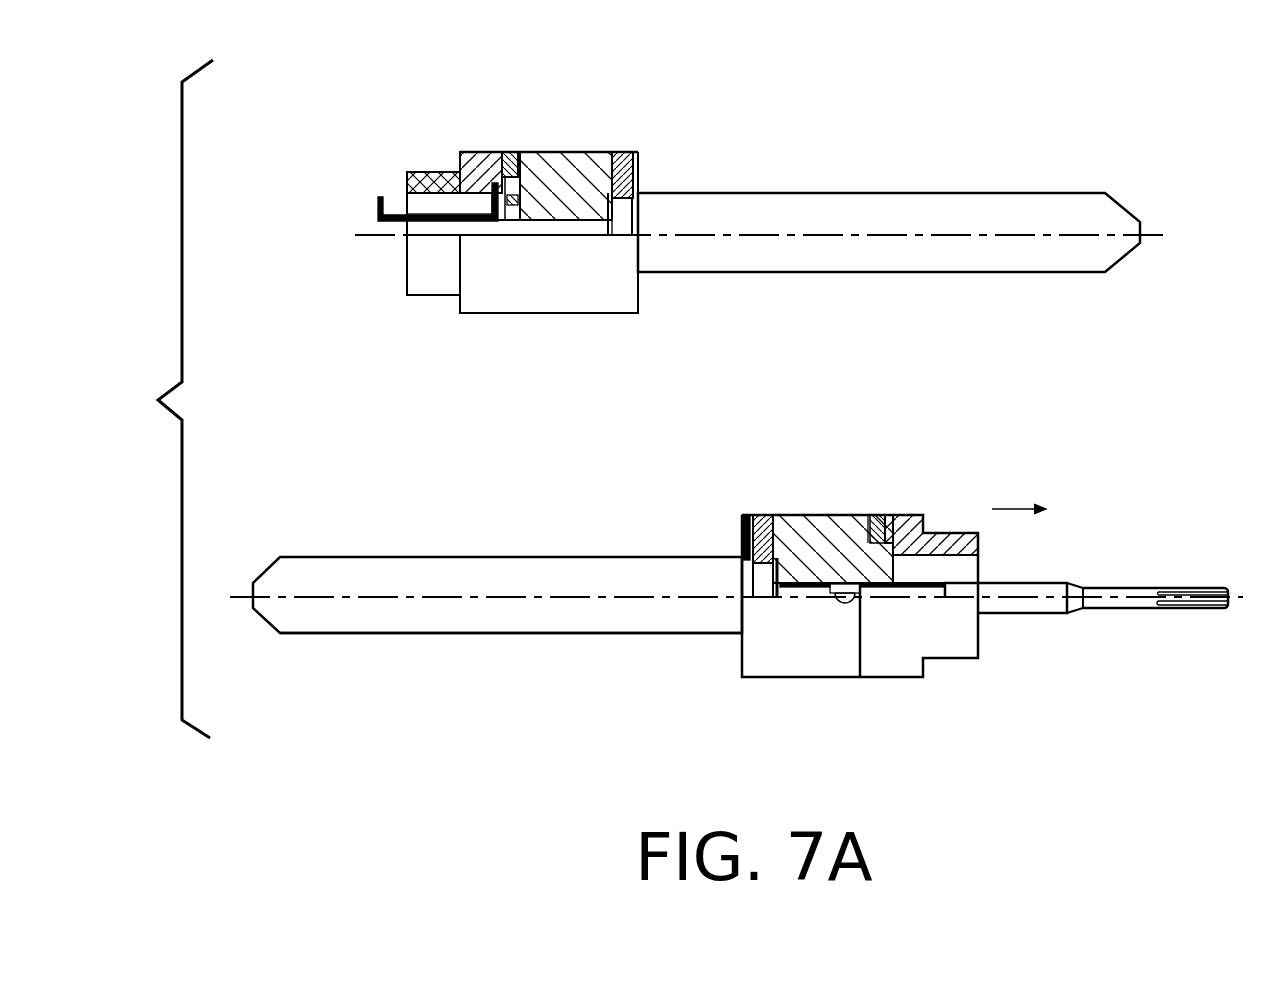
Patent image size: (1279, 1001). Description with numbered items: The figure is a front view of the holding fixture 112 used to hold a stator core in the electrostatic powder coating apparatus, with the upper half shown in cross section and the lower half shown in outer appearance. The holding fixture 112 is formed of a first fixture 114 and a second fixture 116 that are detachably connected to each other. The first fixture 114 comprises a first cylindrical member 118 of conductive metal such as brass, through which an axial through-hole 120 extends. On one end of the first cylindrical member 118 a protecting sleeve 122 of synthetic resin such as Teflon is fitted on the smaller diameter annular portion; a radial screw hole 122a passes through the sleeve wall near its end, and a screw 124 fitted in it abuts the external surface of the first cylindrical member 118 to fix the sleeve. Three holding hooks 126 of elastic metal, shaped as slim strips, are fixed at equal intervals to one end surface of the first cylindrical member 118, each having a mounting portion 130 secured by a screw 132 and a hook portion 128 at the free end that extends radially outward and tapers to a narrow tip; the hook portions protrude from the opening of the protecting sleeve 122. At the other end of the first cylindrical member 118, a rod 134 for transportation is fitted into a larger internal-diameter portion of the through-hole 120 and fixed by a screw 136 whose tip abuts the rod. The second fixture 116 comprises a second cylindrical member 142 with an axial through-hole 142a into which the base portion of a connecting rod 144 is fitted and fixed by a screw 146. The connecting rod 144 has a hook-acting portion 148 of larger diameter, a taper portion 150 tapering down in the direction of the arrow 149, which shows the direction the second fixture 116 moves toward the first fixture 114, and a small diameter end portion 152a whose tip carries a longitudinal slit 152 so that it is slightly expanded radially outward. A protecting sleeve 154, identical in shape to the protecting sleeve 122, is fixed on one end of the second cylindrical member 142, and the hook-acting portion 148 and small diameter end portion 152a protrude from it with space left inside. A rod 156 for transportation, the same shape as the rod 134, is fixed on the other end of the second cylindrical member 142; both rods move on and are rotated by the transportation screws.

The holding fixture 112 is at (317, 254).
The first fixture 114 is at (658, 181).
The second fixture 116 is at (576, 550).
The first cylindrical member 118 is at (565, 157).
The through-hole 120 is at (530, 220).
The protecting sleeve 122 is at (498, 152).
The screw hole 122a is at (505, 157).
The screw 124 is at (517, 157).
The holding hook 126 is at (423, 223).
The hook portion 128 is at (377, 212).
The mounting portion 130 is at (477, 153).
The screw 132 is at (410, 170).
The rod for transportation 134 is at (920, 195).
The screw 136 is at (620, 157).
The second cylindrical member 142 is at (813, 535).
The through-hole 142a is at (800, 590).
The connecting rod 144 is at (1055, 575).
The screw 146 is at (840, 605).
The hook-acting portion 148 is at (1012, 605).
The arrow 149 is at (1020, 509).
The taper portion 150 is at (1077, 607).
The slit 152 is at (1205, 610).
The small diameter end portion 152a is at (1133, 587).
The protecting sleeve 154 is at (907, 512).
The rod for transportation 156 is at (492, 615).